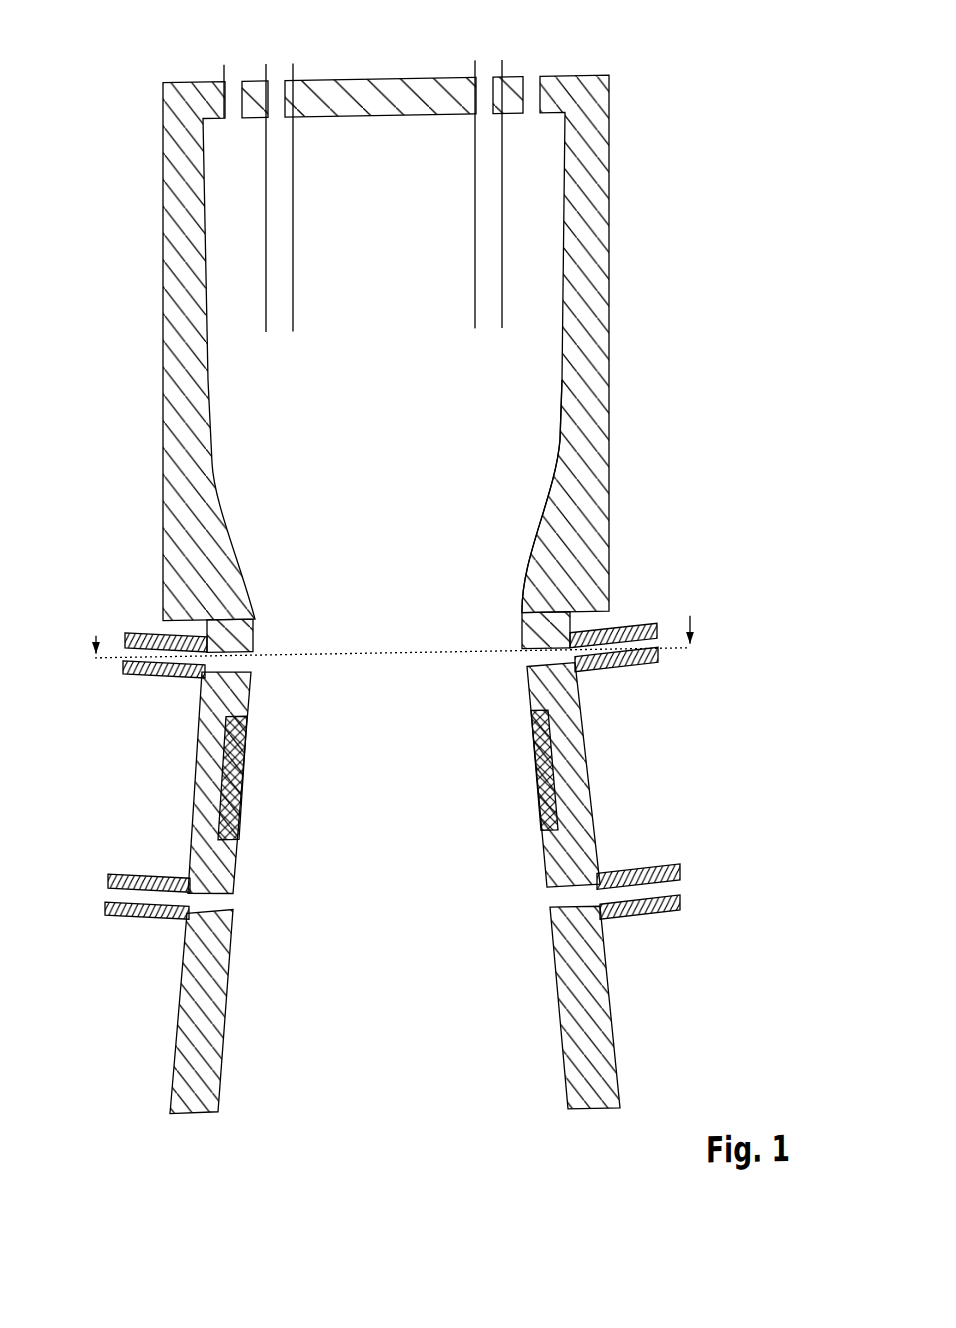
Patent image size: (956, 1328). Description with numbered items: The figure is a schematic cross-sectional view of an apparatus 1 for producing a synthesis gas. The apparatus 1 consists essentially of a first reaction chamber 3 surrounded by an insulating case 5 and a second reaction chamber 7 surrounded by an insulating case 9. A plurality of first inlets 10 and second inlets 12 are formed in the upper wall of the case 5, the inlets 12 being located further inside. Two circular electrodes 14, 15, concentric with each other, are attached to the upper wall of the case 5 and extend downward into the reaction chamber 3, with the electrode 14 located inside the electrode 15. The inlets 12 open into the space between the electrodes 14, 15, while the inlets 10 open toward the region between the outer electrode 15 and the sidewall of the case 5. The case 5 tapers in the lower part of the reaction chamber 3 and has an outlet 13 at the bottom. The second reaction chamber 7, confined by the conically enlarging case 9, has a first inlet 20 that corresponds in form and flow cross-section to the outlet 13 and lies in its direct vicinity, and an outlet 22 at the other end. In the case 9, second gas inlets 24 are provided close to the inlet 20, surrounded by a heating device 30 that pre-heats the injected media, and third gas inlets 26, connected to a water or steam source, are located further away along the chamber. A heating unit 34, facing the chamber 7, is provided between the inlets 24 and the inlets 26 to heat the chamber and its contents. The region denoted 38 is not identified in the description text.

The apparatus for producing a synthesis gas 1 is at (668, 113).
The first reaction chamber 3 is at (353, 434).
The insulating case 5 is at (620, 379).
The second reaction chamber 7 is at (262, 1048).
The insulating case 9 is at (625, 1069).
The first inlets 10 is at (548, 63).
The second inlets 12 is at (290, 68).
The outlet 13 is at (505, 515).
The electrode 14 is at (475, 224).
The electrode 15 is at (503, 296).
The first inlet 20 is at (302, 621).
The outlet 22 is at (335, 1094).
The second gas inlets 24 is at (637, 614).
The third gas inlets 26 is at (675, 860).
The heating device 30 is at (646, 673).
The heating unit 34 is at (553, 796).
The flange plate 38 is at (664, 910).